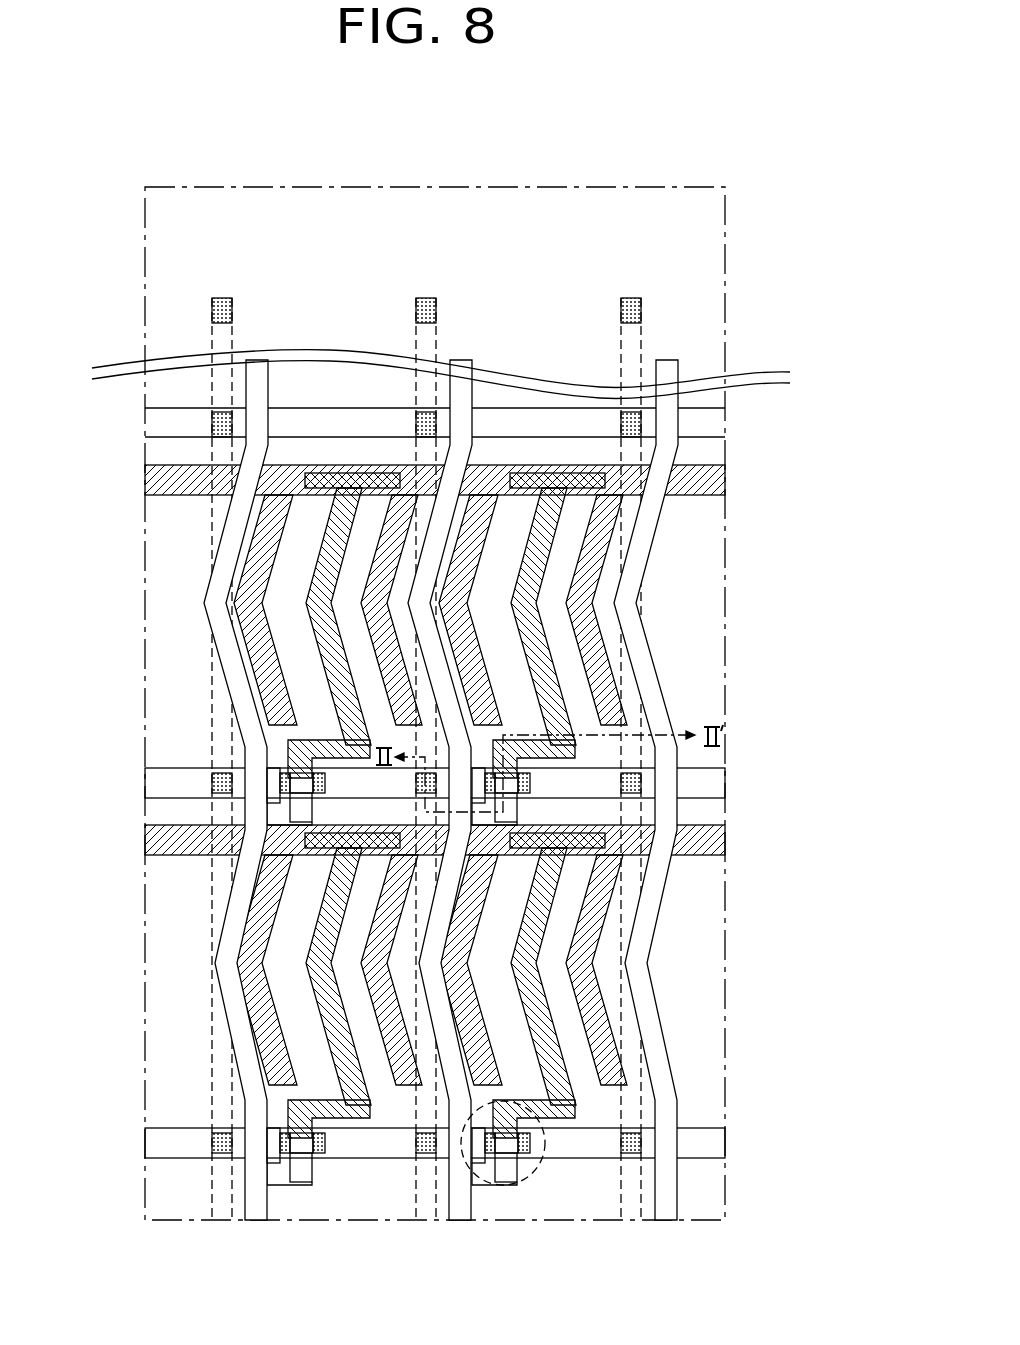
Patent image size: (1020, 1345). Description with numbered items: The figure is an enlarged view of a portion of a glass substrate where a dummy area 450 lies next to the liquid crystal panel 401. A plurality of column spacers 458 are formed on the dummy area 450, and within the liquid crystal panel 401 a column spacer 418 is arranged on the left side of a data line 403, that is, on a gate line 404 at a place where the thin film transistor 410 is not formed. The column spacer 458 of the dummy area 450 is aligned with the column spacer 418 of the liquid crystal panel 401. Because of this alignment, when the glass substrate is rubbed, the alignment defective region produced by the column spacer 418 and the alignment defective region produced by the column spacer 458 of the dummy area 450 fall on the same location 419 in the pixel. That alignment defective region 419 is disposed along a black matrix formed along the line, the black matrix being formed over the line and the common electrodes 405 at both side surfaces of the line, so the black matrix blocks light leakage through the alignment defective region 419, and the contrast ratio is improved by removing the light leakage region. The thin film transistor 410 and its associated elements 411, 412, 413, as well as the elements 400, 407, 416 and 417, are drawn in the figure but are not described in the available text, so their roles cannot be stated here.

The array substrate 400 is at (770, 297).
The liquid crystal panel 401 is at (705, 450).
The data line 403 is at (710, 778).
The gate line 404 is at (455, 395).
The common electrodes 405 is at (262, 967).
The pixel electrode 407 is at (330, 1030).
The thin film transistor 410 is at (503, 1189).
The source electrode 411 is at (522, 1150).
The drain electrode 412 is at (532, 1148).
The thin film transistor 413 is at (497, 1174).
The common line 416 is at (205, 838).
The storage electrode 417 is at (705, 840).
The column spacer 418 is at (416, 1158).
The alignment defective region 419 is at (413, 606).
The dummy area 450 is at (272, 215).
The column spacers 458 is at (212, 308).